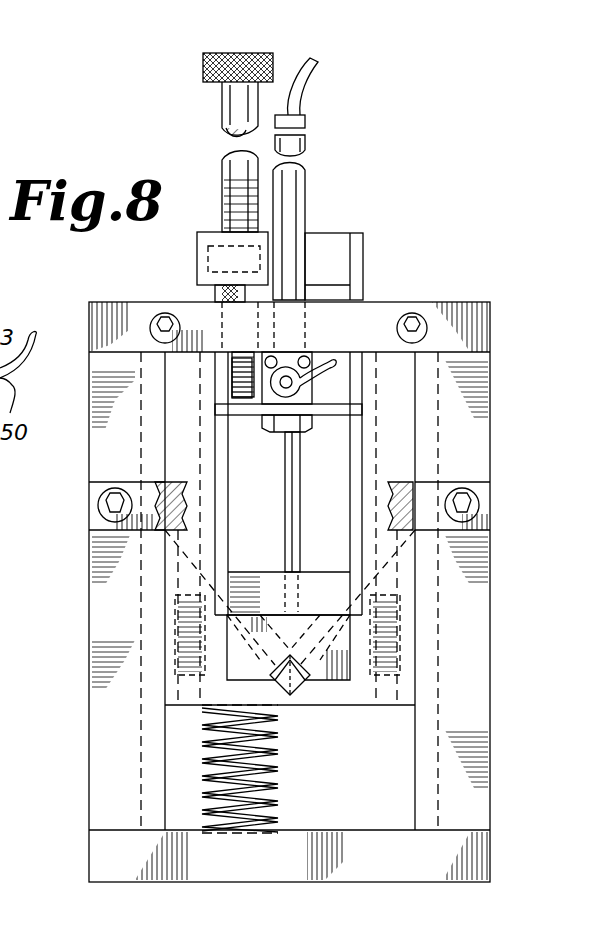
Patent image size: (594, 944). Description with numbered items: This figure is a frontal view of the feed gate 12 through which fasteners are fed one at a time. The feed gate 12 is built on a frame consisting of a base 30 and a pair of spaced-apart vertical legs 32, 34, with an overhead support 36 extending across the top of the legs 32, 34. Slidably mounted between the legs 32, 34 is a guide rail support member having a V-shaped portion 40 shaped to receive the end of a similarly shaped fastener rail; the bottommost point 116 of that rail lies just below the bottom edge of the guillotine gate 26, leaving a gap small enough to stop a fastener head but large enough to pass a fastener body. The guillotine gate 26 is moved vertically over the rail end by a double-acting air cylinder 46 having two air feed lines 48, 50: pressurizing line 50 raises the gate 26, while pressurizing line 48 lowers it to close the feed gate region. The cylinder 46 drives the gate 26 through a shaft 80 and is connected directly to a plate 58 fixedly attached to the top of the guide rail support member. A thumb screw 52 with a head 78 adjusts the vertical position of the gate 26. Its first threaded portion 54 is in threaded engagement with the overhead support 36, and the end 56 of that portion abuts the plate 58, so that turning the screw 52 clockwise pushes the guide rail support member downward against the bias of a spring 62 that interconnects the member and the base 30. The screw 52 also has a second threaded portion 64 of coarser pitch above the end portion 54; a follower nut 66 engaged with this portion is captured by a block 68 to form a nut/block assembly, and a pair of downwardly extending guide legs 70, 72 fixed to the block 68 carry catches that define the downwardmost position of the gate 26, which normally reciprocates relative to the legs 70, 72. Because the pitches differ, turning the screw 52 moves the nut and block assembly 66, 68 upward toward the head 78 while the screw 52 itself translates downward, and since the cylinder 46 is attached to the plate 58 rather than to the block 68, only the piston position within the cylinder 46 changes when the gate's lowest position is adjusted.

The feed gate 12 is at (505, 588).
The guillotine gate 26 is at (345, 662).
The base 30 is at (490, 882).
The vertical leg 32 is at (467, 638).
The vertical leg 34 is at (115, 628).
The overhead support 36 is at (478, 332).
The V-shaped portion 40 is at (305, 690).
The double-acting air cylinder 46 is at (292, 210).
The air feed line 48 is at (298, 93).
The air feed line 50 is at (310, 357).
The thumb screw 52 is at (228, 102).
The first threaded portion 54 is at (253, 297).
The end of first threaded portion 56 is at (242, 365).
The plate 58 is at (337, 407).
The spring 62 is at (272, 748).
The second threaded portion 64 is at (263, 202).
The follower nut 66 is at (215, 263).
The block 68 is at (330, 242).
The guide leg 70 is at (222, 532).
The guide leg 72 is at (356, 478).
The screw head 78 is at (203, 68).
The shaft 80 is at (296, 465).
The bottommost point of rail 116 is at (273, 658).